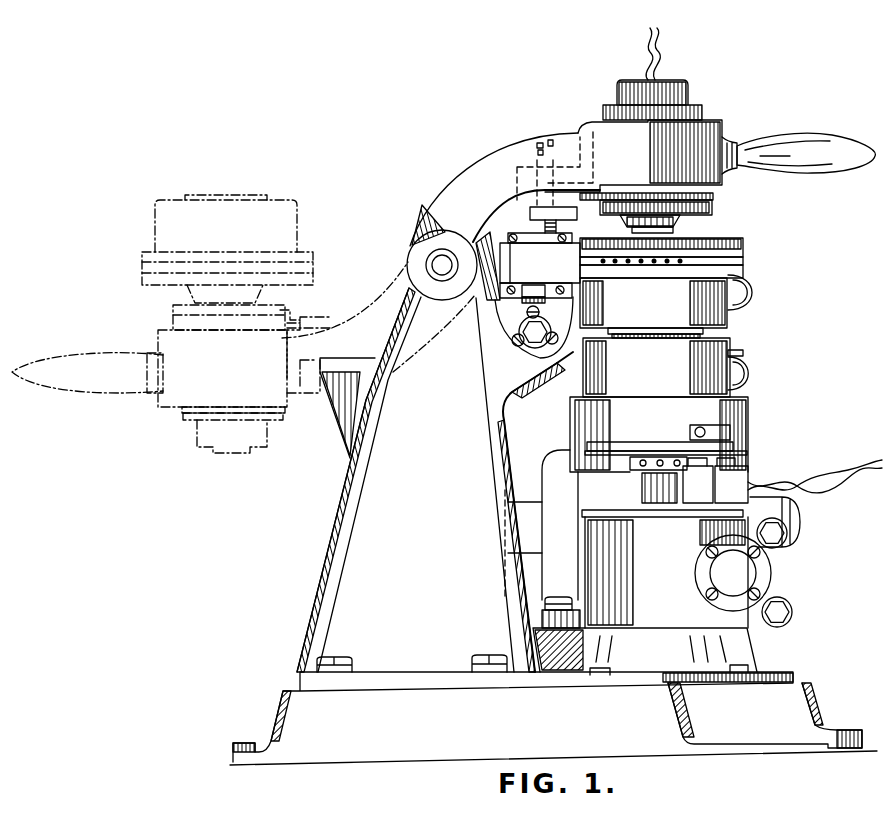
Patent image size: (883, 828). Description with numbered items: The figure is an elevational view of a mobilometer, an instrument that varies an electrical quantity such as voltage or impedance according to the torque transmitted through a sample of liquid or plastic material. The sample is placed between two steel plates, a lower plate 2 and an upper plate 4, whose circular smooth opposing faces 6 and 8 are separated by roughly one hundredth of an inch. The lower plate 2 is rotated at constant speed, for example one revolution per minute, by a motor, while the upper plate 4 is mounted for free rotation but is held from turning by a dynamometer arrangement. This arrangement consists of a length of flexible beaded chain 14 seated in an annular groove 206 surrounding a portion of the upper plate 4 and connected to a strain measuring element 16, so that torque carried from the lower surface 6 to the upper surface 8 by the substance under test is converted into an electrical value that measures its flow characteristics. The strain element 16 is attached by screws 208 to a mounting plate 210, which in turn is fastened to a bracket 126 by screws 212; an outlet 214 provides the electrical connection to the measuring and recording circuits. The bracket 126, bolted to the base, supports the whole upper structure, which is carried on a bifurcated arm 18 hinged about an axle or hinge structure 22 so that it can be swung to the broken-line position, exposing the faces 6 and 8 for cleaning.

The lower plate 2 is at (585, 372).
The upper plate 4 is at (731, 321).
The lower plate surface 6 is at (643, 338).
The upper plate surface 8 is at (631, 329).
The flexible beaded chain 14 is at (683, 260).
The strain measuring element 16 is at (562, 250).
The arm 18 is at (477, 165).
The hinge structure 22 is at (433, 260).
The bracket 126 is at (337, 518).
The annular groove 206 is at (743, 260).
The screws 208 is at (508, 287).
The mounting plate 210 is at (510, 333).
The screws 212 is at (538, 382).
The outlet 214 is at (522, 306).